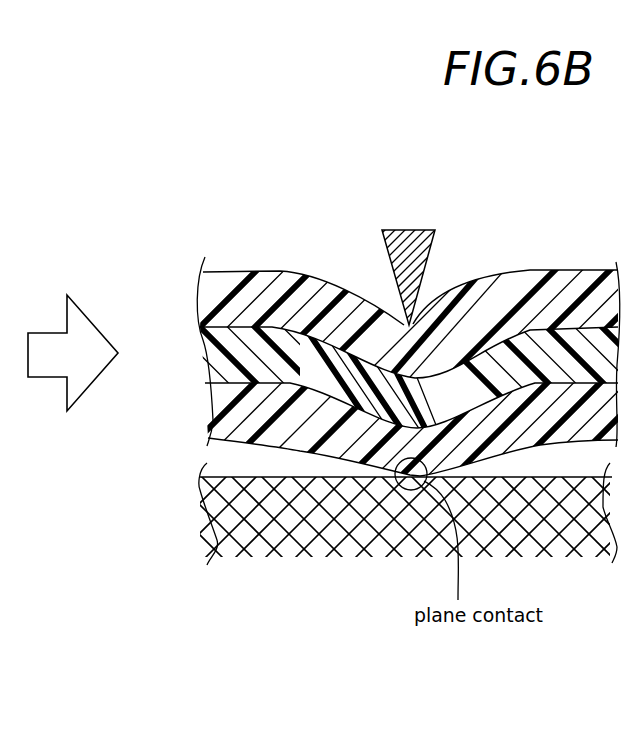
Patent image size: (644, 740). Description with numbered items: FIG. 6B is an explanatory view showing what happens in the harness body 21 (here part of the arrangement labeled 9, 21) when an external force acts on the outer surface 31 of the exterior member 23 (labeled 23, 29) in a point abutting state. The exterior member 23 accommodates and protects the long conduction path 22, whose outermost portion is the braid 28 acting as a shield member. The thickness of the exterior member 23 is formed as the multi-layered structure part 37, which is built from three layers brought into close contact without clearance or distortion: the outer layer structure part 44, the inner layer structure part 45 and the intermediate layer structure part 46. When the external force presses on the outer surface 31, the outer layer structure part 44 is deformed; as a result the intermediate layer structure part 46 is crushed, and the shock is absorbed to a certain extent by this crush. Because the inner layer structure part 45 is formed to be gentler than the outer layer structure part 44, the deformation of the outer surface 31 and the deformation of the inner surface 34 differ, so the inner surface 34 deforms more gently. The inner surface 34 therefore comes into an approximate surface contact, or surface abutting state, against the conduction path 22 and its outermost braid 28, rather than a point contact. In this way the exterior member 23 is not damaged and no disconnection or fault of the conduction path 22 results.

The electronic device 9 is at (345, 251).
The harness body 21 is at (341, 147).
The outer surface 31 is at (228, 270).
The exterior member 23 is at (356, 331).
The bonding layer 29 is at (264, 270).
The inner surface 34 is at (300, 451).
The multi-layered structure part 37 is at (643, 184).
The outer layer structure part 44 is at (515, 293).
The inner layer structure part 45 is at (532, 400).
The intermediate layer structure part 46 is at (616, 262).
The conduction path 22 is at (288, 560).
The braid 28 is at (331, 550).